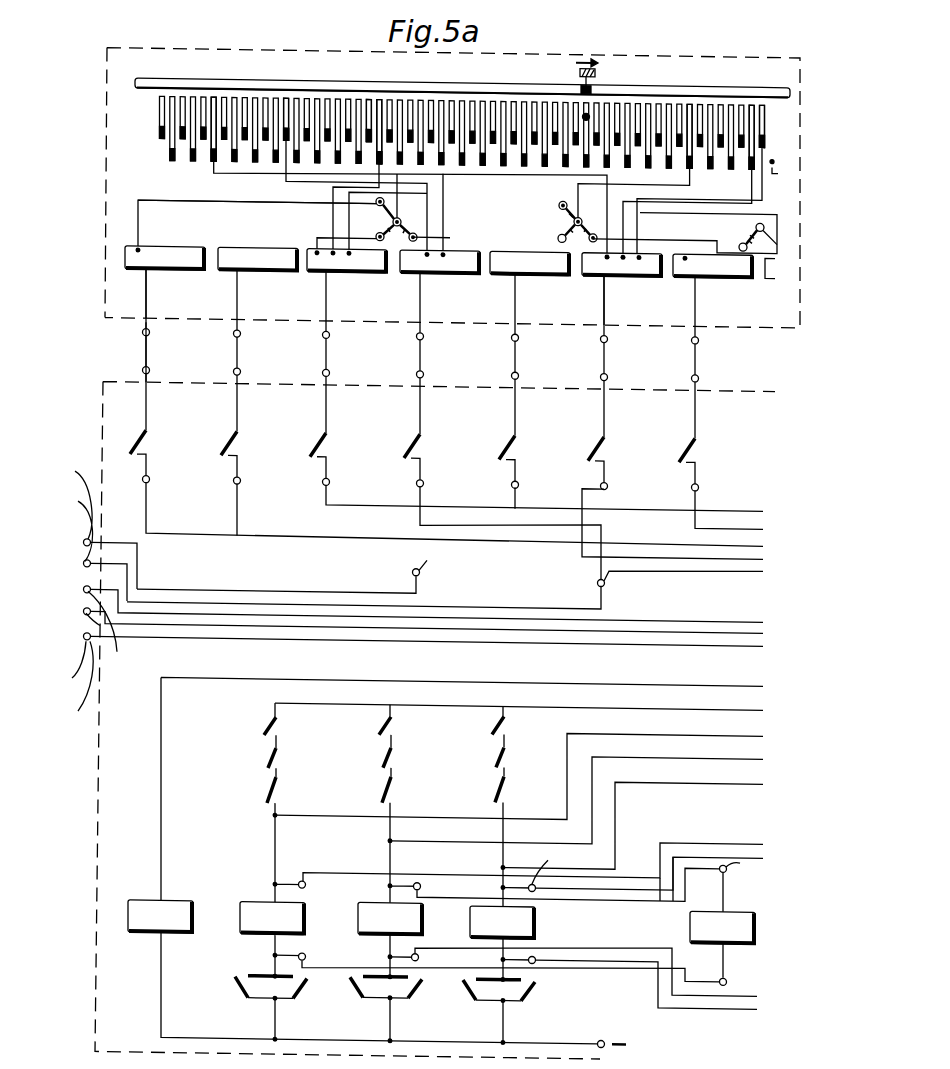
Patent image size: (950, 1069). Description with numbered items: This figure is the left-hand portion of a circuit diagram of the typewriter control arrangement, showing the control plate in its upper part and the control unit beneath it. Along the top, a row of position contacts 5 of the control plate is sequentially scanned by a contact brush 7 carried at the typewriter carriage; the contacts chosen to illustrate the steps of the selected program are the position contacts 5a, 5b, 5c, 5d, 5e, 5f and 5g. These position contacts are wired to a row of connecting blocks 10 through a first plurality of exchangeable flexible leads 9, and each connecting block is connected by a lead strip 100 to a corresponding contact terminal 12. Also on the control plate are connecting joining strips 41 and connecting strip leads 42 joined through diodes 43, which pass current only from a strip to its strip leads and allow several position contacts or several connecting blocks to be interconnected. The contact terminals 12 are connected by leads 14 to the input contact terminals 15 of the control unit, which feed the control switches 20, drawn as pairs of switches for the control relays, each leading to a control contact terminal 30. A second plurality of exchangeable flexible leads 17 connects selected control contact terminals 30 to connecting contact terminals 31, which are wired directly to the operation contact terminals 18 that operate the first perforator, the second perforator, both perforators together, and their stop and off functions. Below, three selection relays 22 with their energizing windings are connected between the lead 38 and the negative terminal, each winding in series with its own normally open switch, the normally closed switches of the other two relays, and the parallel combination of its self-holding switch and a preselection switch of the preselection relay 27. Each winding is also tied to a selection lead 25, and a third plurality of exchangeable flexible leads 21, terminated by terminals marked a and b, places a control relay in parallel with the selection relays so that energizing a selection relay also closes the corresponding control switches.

The position contacts 5 is at (160, 112).
The position contact 5a is at (214, 93).
The position contact 5b is at (286, 93).
The position contact 5c is at (369, 93).
The position contact 5d is at (380, 93).
The position contact 5e is at (690, 93).
The position contact 5f is at (752, 93).
The position contact 5g is at (763, 94).
The contact brush 7 is at (595, 66).
The first plurality of exchangeable flexible leads 9 is at (345, 226).
The connecting blocks 10 is at (770, 306).
The lead strips 100 is at (612, 314).
The contact terminals 12 is at (615, 337).
The leads 14 is at (138, 351).
The input contact terminals 15 is at (615, 373).
The second plurality of exchangeable flexible leads 17 is at (430, 516).
The operation contact terminals 18 is at (396, 602).
The control switches / control relays 20 is at (437, 452).
The third plurality of exchangeable flexible leads 21 is at (672, 895).
The selection relays 22 is at (470, 982).
The selection leads 25 is at (646, 774).
The preselection relay 27 is at (148, 900).
The control contact terminals 30 is at (709, 477).
The connecting contact terminals 31 is at (628, 588).
The lead 38 is at (645, 700).
The connecting joining strips 41 is at (403, 214).
The connecting strip leads 42 is at (455, 233).
The diodes 43 is at (392, 204).